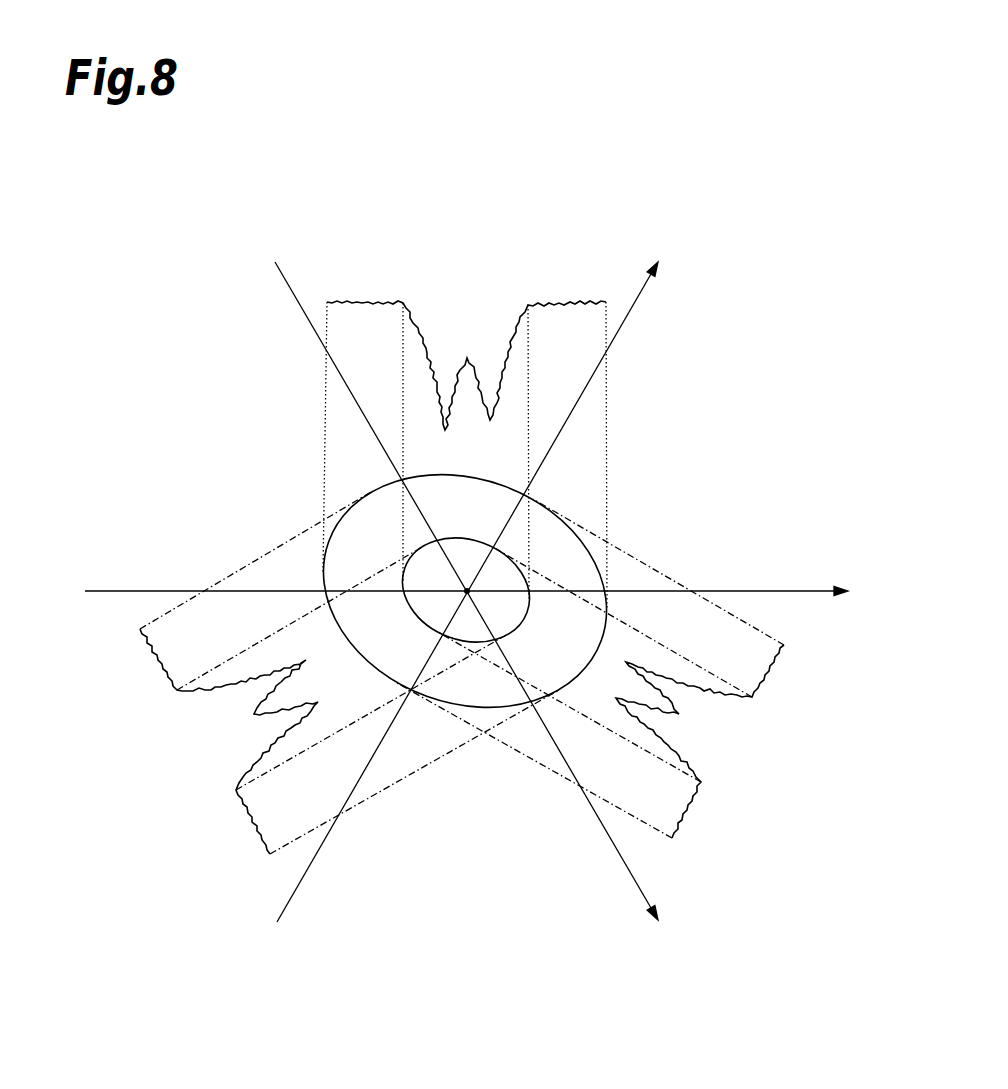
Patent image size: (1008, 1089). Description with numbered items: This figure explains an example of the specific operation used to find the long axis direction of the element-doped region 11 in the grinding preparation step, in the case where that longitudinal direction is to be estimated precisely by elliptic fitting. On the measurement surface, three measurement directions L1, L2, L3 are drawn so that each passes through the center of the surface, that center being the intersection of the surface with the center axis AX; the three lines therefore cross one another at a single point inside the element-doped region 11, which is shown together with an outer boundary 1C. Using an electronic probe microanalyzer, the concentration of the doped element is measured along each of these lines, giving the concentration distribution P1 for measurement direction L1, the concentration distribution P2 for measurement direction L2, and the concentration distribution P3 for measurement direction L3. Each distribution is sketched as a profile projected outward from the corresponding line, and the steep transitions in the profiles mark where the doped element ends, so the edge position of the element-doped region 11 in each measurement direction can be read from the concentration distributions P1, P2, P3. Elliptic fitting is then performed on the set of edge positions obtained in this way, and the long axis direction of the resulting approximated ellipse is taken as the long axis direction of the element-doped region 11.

The element-doped region 11 is at (427, 567).
The outer circle of the annular workpiece 1C is at (553, 497).
The center axis AX is at (466, 616).
The measurement direction L1 is at (479, 578).
The measurement direction L2 is at (486, 592).
The measurement direction L3 is at (478, 607).
The concentration distribution P1 is at (768, 667).
The concentration distribution P2 is at (574, 303).
The concentration distribution P3 is at (160, 652).